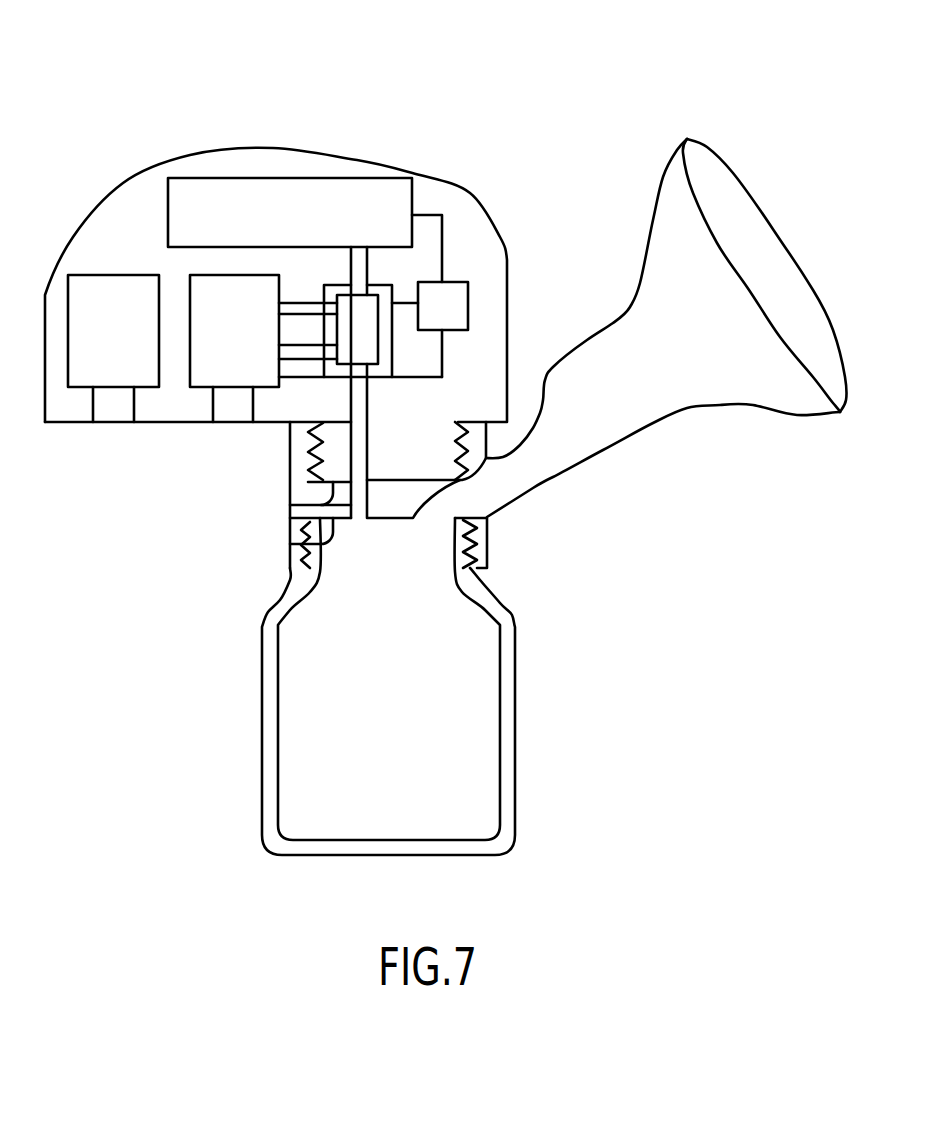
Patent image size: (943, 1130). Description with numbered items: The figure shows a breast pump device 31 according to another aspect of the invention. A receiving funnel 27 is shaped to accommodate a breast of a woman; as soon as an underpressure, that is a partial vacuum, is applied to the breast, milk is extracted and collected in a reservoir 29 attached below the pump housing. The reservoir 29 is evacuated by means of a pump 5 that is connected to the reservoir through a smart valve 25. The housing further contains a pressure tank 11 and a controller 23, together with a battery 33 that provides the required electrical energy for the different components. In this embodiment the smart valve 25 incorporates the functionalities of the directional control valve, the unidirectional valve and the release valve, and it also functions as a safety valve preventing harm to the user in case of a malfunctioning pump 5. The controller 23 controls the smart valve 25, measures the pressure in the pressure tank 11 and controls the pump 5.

The breast pump device 31 is at (276, 287).
The pressure tank 11 is at (338, 178).
The battery 33 is at (107, 275).
The pump 5 is at (197, 388).
The smart valve 25 is at (336, 371).
The controller 23 is at (468, 303).
The receiving funnel 27 is at (653, 227).
The reservoir 29 is at (497, 720).